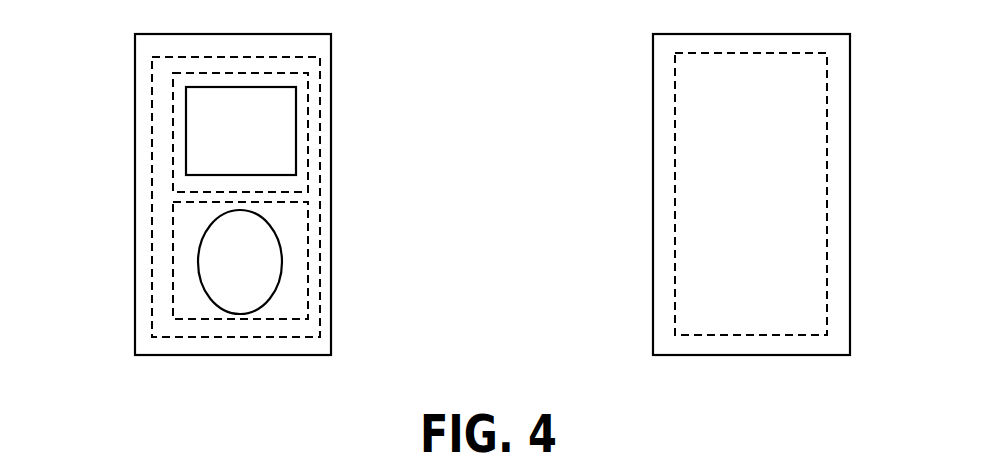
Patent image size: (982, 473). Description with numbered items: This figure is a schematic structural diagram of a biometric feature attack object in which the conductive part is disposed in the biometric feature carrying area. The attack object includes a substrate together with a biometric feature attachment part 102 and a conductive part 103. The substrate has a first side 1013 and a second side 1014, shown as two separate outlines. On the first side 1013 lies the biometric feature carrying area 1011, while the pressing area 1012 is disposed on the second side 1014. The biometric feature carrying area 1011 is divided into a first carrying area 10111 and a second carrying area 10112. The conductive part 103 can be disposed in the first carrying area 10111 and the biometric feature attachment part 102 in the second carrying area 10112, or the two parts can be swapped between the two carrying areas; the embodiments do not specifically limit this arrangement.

The biometric feature attachment part 102 is at (282, 266).
The conductive part 103 is at (296, 125).
The biometric feature carrying area 1011 is at (152, 242).
The first carrying area 10111 is at (173, 298).
The second carrying area 10112 is at (173, 122).
The pressing area 1012 is at (827, 193).
The first side 1013 is at (212, 355).
The second side 1014 is at (720, 355).